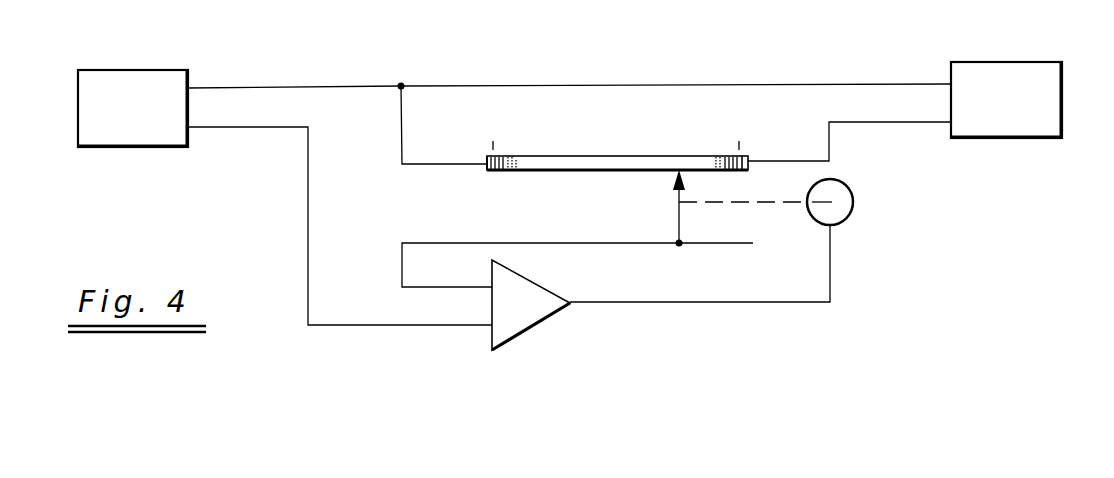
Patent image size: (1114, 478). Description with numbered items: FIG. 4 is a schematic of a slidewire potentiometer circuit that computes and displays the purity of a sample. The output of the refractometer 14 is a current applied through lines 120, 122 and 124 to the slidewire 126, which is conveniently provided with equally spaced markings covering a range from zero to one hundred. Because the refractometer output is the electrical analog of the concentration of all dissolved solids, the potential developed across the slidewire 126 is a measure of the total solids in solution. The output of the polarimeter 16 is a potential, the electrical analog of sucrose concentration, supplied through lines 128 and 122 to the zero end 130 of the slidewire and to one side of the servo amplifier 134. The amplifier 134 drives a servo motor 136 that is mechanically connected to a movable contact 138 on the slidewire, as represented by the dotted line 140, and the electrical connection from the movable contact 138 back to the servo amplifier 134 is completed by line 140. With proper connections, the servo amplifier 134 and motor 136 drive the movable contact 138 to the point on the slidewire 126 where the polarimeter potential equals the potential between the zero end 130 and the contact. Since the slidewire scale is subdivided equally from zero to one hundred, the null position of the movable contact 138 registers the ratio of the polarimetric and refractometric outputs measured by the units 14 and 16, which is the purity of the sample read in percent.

The refractometer 14 is at (1020, 70).
The polarimeter 16 is at (147, 75).
The line 120 is at (772, 84).
The line 122 is at (427, 166).
The line 124 is at (896, 123).
The slidewire 126 is at (545, 172).
The line 128 is at (327, 88).
The zero end of the slidewire 130 is at (487, 162).
The servo amplifier 134 is at (538, 316).
The servo motor 136 is at (852, 206).
The movable contact 138 is at (679, 225).
The line 140 is at (609, 246).